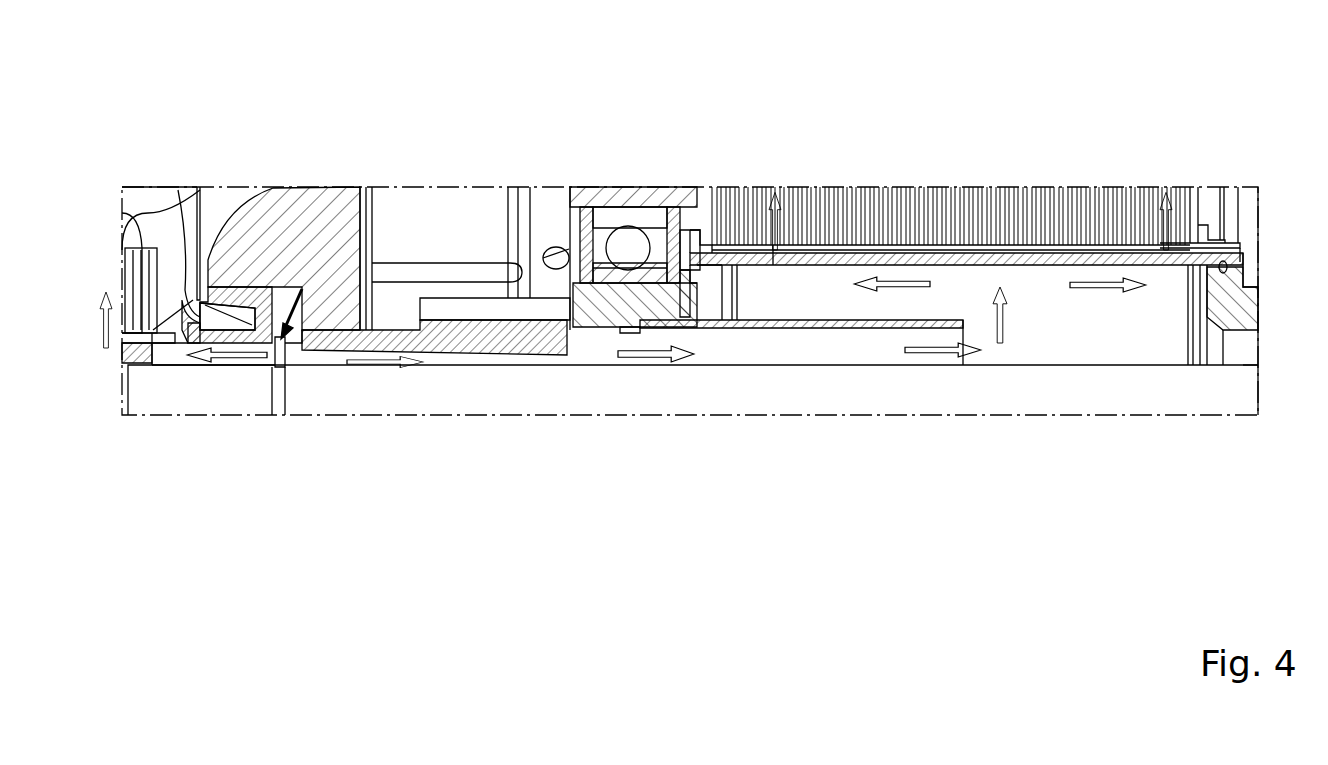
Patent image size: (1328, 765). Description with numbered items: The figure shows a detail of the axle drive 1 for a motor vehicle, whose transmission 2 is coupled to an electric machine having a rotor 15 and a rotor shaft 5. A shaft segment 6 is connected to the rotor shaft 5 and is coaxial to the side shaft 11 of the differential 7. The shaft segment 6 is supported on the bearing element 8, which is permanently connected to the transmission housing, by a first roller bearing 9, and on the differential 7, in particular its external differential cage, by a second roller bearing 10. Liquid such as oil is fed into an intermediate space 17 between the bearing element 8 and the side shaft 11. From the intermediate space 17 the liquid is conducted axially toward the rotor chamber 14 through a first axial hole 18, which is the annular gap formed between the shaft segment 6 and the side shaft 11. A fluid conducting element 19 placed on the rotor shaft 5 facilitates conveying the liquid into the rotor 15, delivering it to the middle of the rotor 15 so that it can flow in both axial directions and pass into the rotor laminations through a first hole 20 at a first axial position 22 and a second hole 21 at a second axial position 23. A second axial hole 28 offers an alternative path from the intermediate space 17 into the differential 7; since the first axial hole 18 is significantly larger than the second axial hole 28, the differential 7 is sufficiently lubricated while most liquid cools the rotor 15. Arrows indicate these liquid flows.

The axle drive 1 is at (90, 148).
The transmission 2 is at (433, 440).
The rotor shaft 5 is at (615, 303).
The shaft segment 6 is at (462, 333).
The differential 7 is at (147, 232).
The bearing element 8 is at (269, 258).
The first roller bearing 9 is at (192, 346).
The second roller bearing 10 is at (330, 337).
The side shaft 11 is at (1213, 393).
The rotor chamber 14 is at (1067, 315).
The rotor 15 is at (912, 207).
The intermediate space 17 is at (277, 370).
The first axial hole 18 is at (307, 373).
The fluid conducting element 19 is at (847, 330).
The first hole 20 is at (1156, 300).
The second hole 21 is at (765, 268).
The first axial position 22 is at (1157, 293).
The second axial position 23 is at (773, 252).
The second axial hole 28 is at (221, 372).